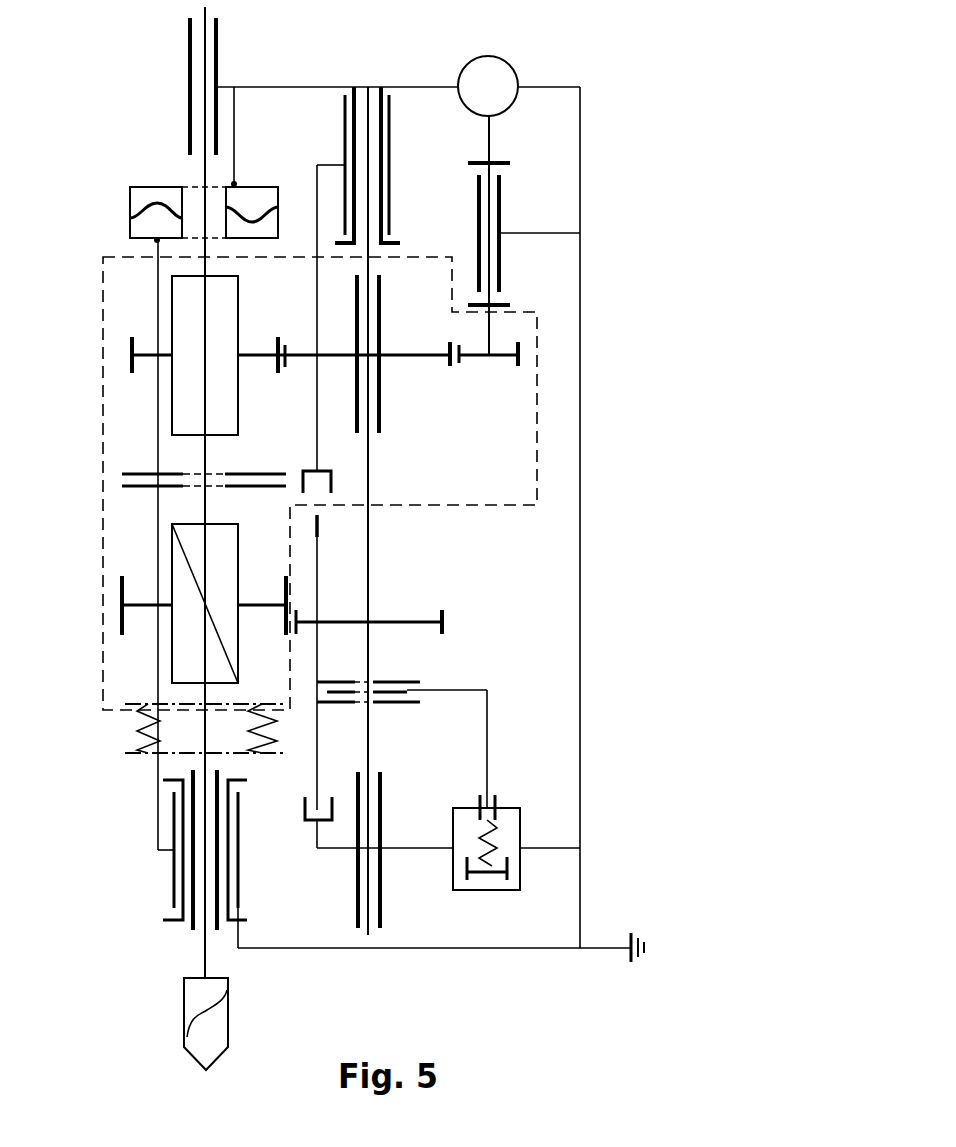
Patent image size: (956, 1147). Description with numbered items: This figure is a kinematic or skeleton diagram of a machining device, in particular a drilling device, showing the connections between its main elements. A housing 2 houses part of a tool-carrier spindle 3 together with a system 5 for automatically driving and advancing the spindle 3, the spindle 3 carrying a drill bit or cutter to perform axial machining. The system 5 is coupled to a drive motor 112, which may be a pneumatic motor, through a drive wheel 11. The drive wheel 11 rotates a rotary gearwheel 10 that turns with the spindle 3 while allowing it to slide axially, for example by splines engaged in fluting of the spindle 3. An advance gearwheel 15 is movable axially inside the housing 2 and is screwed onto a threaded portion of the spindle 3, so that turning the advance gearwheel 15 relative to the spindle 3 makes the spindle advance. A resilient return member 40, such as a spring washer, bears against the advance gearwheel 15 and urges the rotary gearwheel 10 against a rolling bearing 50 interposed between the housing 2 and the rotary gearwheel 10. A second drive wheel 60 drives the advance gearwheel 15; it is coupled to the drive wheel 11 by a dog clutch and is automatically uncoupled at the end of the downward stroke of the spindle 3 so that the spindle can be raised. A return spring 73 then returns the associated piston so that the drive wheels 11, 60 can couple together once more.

The drive motor 112 is at (488, 56).
The drive wheel 11 is at (490, 330).
The drive wheel 60 is at (380, 328).
The rolling bearing 50 is at (130, 205).
The rotary gearwheel 10 is at (172, 307).
The advance gearwheel 15 is at (122, 618).
The system for automatically driving and advancing the spindle 5 is at (84, 505).
The resilient return member 40 is at (133, 754).
The tool-carrier spindle 3 is at (205, 958).
The return spring 73 is at (473, 873).
The housing 2 is at (582, 883).